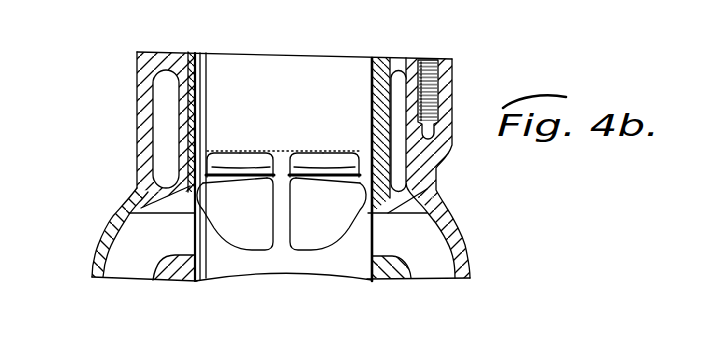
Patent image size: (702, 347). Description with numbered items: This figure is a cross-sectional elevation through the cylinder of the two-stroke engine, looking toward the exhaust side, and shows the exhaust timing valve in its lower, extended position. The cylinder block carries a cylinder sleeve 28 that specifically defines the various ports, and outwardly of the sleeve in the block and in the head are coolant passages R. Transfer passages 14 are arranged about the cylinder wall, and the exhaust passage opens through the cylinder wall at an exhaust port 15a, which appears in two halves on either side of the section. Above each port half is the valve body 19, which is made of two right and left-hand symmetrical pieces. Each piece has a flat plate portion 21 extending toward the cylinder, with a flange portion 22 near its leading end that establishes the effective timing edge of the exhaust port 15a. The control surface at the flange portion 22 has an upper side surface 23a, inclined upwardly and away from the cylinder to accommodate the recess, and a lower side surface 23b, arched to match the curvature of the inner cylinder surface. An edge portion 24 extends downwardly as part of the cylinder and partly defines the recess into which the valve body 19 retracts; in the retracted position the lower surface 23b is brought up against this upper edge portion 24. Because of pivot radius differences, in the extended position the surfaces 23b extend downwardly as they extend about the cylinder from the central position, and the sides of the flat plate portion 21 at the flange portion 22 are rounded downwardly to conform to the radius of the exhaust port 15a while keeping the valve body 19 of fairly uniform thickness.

The transfer passages 14 is at (121, 258).
The coolant passages R is at (160, 150).
The cylinder sleeve 28 is at (197, 80).
The edge portion 24 is at (230, 152).
The flange portion 22 is at (213, 156).
The valve body 19 is at (252, 162).
The upper side surface 23a is at (257, 154).
The lower side surface 23b is at (250, 162).
The flat plate portion 21 is at (225, 180).
The exhaust port 15a is at (227, 230).